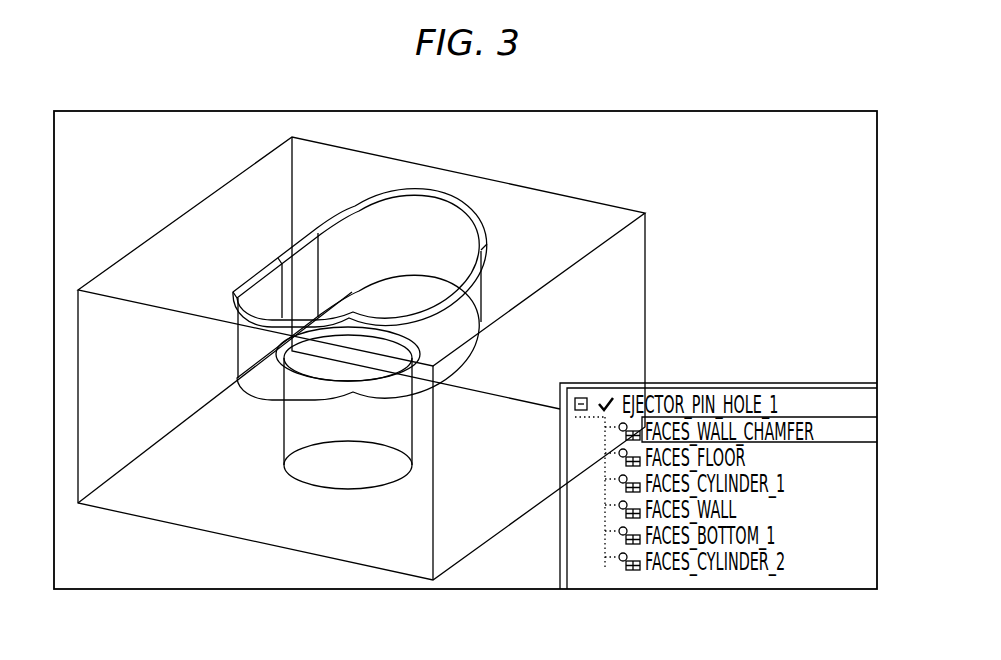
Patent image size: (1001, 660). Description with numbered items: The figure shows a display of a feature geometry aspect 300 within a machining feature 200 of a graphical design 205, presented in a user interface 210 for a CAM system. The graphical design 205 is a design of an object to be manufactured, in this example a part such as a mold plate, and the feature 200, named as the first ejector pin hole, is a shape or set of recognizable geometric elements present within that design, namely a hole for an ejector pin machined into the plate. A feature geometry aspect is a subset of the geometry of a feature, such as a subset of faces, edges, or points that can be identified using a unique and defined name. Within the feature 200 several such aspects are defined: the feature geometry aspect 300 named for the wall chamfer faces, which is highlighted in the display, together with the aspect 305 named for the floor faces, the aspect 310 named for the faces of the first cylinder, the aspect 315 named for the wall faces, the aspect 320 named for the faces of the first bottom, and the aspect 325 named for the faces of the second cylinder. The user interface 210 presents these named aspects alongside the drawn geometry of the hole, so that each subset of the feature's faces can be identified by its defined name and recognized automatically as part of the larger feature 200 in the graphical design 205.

The feature 200 is at (353, 304).
The graphical design 205 is at (582, 197).
The user interface 210 is at (163, 111).
The feature geometry aspect 300 is at (321, 228).
The aspect 305 is at (411, 288).
The aspect 310 is at (278, 257).
The aspect 315 is at (408, 212).
The aspect 320 is at (420, 326).
The aspect 325 is at (403, 426).